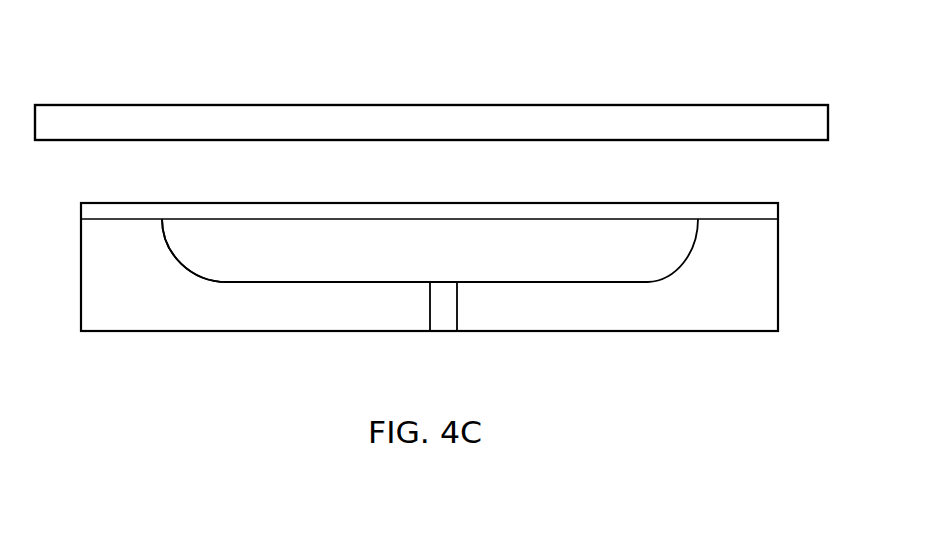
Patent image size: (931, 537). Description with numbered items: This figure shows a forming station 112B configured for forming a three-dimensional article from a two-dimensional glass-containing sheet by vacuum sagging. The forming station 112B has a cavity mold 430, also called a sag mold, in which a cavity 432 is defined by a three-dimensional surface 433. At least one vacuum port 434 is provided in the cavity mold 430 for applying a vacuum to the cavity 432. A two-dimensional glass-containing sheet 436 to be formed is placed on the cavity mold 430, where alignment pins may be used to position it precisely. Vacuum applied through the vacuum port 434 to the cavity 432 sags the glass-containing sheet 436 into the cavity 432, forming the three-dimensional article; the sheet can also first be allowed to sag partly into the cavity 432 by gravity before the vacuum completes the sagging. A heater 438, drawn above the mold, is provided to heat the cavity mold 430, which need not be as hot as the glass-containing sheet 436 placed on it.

The forming station 112B is at (398, 78).
The heater 438 is at (442, 120).
The cavity mold 430 is at (683, 315).
The 2D glass-containing sheet 436 is at (429, 212).
The cavity 432 is at (655, 262).
The 3D surface 433 is at (237, 280).
The vacuum port 434 is at (440, 320).